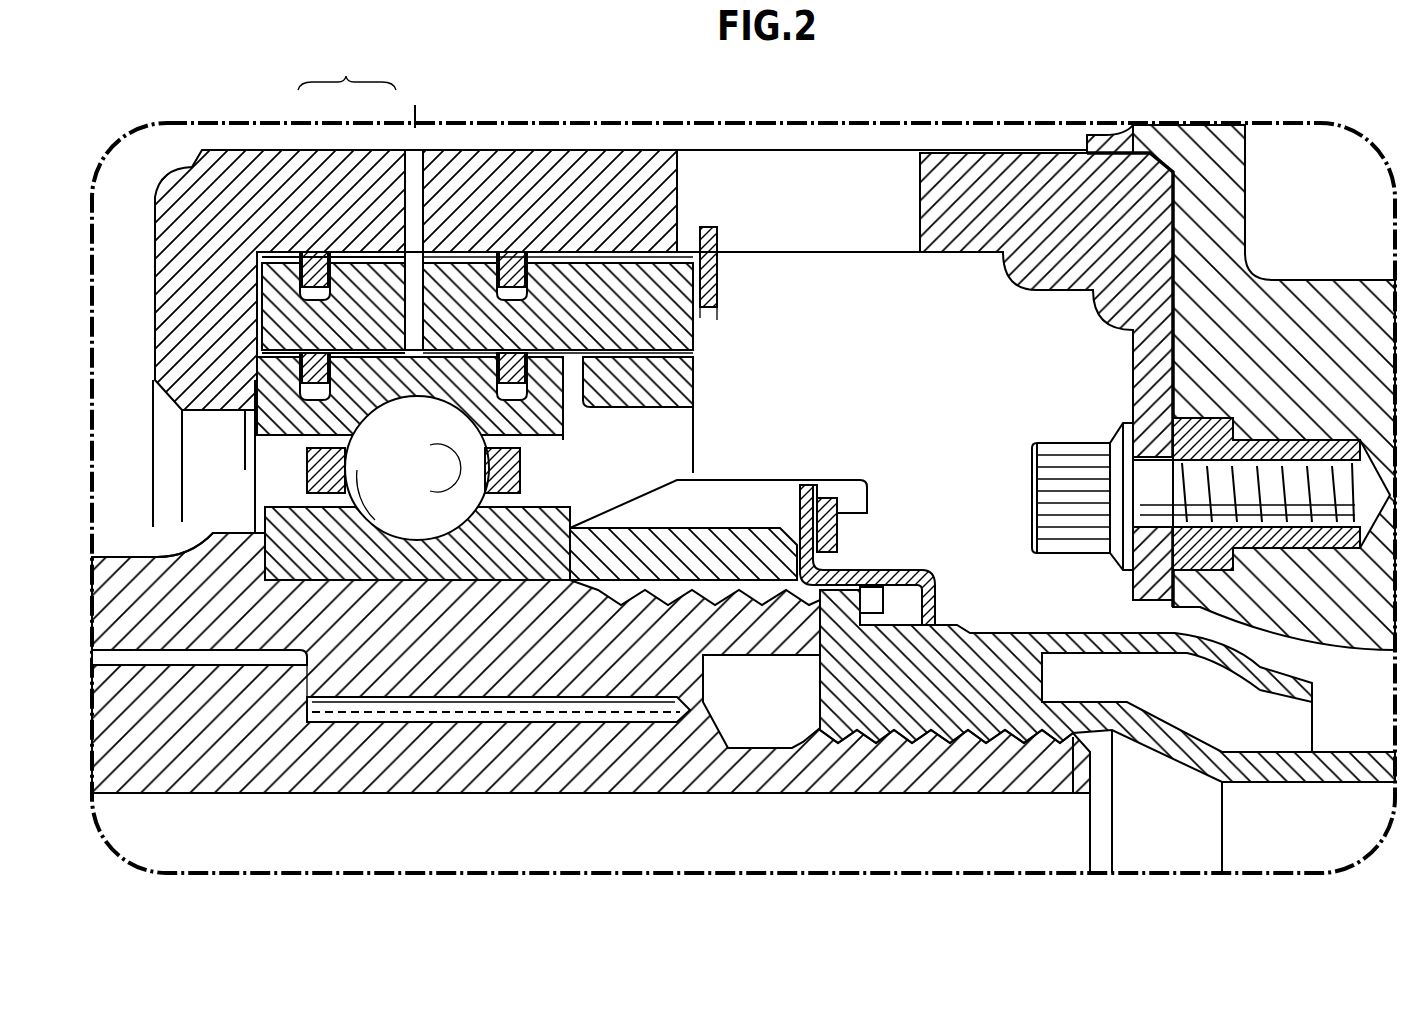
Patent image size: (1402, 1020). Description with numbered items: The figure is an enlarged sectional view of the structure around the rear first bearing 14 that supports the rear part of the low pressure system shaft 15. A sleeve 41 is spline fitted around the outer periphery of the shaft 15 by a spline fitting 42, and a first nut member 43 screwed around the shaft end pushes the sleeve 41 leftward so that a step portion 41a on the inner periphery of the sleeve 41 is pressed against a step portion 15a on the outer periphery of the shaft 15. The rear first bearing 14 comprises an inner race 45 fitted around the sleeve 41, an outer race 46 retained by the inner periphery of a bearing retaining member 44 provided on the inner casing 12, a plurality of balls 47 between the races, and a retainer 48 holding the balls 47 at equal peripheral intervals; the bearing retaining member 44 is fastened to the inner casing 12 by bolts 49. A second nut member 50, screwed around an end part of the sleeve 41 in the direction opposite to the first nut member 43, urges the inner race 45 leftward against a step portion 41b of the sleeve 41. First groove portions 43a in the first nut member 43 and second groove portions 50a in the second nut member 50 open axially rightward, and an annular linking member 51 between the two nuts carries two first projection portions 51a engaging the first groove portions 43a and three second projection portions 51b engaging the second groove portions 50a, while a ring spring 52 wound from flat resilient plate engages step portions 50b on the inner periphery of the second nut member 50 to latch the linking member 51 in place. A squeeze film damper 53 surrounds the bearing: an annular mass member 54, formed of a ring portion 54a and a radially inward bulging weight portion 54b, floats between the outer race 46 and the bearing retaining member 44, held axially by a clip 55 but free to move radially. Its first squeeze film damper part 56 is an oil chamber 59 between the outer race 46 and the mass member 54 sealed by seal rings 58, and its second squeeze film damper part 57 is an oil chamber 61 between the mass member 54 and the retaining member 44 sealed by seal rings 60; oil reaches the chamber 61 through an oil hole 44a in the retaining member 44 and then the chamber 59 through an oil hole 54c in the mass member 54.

The inner casing 12 is at (1228, 223).
The rear first bearing 14 is at (497, 314).
The low pressure system shaft 15 is at (591, 673).
The step portion 15a is at (312, 702).
The sleeve 41 is at (331, 636).
The step portion 41a is at (307, 680).
The step portion 41b is at (267, 530).
The spline fitting 42 is at (490, 707).
The first nut member 43 is at (1049, 713).
The first groove portions 43a is at (795, 657).
The bearing retaining member 44 is at (663, 324).
The oil hole 44a is at (420, 160).
The inner race 45 is at (575, 478).
The outer race 46 is at (283, 412).
The balls 47 is at (428, 482).
The retainer 48 is at (306, 468).
The bolts 49 is at (1060, 455).
The second nut member 50 is at (741, 481).
The second groove portions 50a is at (688, 526).
The step portions 50b is at (840, 520).
The linking member 51 is at (857, 554).
The first projection portions 51a is at (922, 612).
The second projection portions 51b is at (800, 504).
The ring spring 52 is at (830, 498).
The squeeze film damper 53 is at (333, 200).
The annular mass member 54 is at (436, 260).
The ring portion 54a is at (472, 280).
The weight portion 54b is at (667, 368).
The oil hole 54c is at (424, 305).
The clip 55 is at (712, 265).
The first squeeze film damper part 56 is at (342, 340).
The second squeeze film damper part 57 is at (360, 255).
The seal rings 58 is at (305, 370).
The oil chamber 59 is at (381, 353).
The seal rings 60 is at (314, 262).
The oil chamber 61 is at (390, 258).